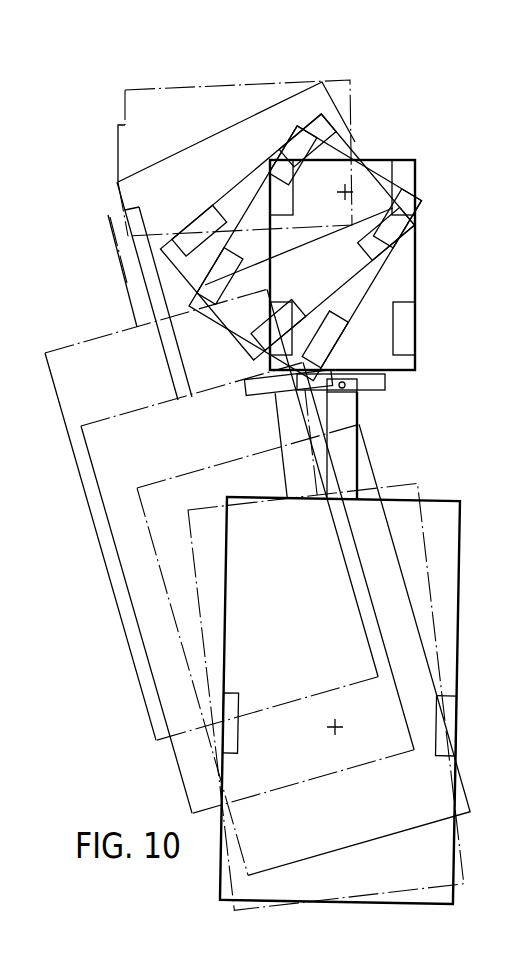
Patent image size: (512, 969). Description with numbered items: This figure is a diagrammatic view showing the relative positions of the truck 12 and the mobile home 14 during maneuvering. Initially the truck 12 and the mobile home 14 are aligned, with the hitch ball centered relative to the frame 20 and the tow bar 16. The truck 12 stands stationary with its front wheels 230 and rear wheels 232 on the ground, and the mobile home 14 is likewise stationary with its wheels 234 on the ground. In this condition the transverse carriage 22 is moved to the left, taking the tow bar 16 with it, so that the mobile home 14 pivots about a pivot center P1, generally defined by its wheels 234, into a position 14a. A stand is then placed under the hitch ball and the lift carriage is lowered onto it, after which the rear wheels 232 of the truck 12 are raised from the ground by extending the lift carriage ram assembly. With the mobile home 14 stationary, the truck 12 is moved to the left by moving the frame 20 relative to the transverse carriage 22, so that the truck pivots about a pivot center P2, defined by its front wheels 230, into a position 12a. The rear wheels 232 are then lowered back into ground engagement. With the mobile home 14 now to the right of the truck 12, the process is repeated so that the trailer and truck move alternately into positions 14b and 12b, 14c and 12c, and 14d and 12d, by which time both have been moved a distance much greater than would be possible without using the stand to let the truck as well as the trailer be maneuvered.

The truck 12 is at (417, 262).
The truck position 12a is at (210, 283).
The truck position 12b is at (190, 230).
The truck position 12c is at (147, 165).
The truck position 12d is at (125, 90).
The mobile home 14 is at (222, 682).
The mobile home position 14a is at (200, 640).
The mobile home position 14b is at (157, 568).
The mobile home position 14c is at (107, 522).
The mobile home position 14d is at (57, 402).
The tow bar 16 is at (357, 468).
The frame 20 is at (388, 379).
The transverse carriage 22 is at (358, 390).
The front wheels 230 is at (280, 200).
The rear wheels 232 is at (292, 334).
The wheels 234 is at (226, 694).
The pivot center P1 is at (338, 732).
The pivot center P2 is at (338, 186).